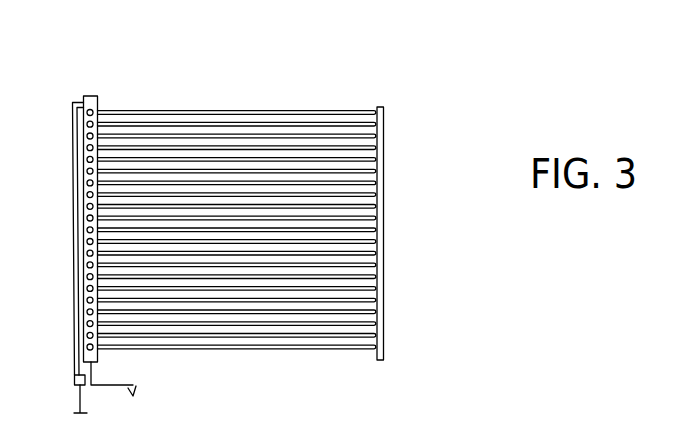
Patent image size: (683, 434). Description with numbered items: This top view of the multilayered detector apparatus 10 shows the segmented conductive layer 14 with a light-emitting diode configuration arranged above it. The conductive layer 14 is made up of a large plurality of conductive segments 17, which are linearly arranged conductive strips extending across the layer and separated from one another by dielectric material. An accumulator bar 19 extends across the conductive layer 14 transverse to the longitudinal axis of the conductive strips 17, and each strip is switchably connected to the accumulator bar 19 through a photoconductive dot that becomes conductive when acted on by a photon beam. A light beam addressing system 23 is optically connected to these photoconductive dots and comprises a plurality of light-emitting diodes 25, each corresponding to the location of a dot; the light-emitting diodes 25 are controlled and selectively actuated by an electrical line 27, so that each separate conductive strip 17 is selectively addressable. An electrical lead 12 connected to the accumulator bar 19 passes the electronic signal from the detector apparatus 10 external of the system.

The multilayered detector apparatus 10 is at (302, 70).
The electrical lead 12 is at (80, 402).
The segmented conductive layer 14 is at (366, 107).
The conductive segments 17 is at (380, 125).
The accumulator bar 19 is at (75, 376).
The light beam addressing system 23 is at (91, 96).
The light-emitting diodes 25 is at (83, 176).
The electrical line 27 is at (137, 394).